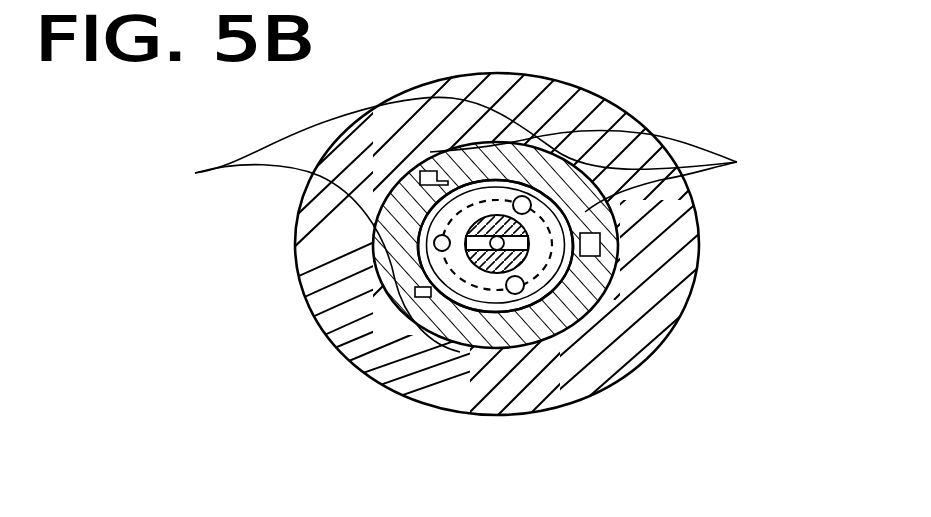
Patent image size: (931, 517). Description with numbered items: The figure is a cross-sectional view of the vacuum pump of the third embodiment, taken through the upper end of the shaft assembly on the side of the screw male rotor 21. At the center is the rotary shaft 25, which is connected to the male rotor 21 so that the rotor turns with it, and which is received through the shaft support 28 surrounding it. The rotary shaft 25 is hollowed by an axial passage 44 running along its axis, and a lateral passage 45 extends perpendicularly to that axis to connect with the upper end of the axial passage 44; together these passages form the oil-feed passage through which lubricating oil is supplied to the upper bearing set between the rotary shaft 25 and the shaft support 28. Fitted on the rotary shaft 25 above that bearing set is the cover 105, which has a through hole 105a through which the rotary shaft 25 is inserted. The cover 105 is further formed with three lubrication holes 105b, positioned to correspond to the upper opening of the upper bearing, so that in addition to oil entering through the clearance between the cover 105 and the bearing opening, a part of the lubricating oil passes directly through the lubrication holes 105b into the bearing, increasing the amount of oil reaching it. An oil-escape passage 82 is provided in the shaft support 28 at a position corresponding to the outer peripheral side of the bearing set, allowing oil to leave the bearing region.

The screw male rotor 21 is at (670, 275).
The shaft support 28 is at (610, 225).
The cover 105 is at (560, 288).
The through hole 105a is at (479, 262).
The lubrication holes 105b is at (737, 162).
The axial passage 44 is at (493, 250).
The rotary shaft 25 is at (497, 252).
The lateral passage 45 is at (443, 252).
The oil-escape passage 82 is at (195, 173).